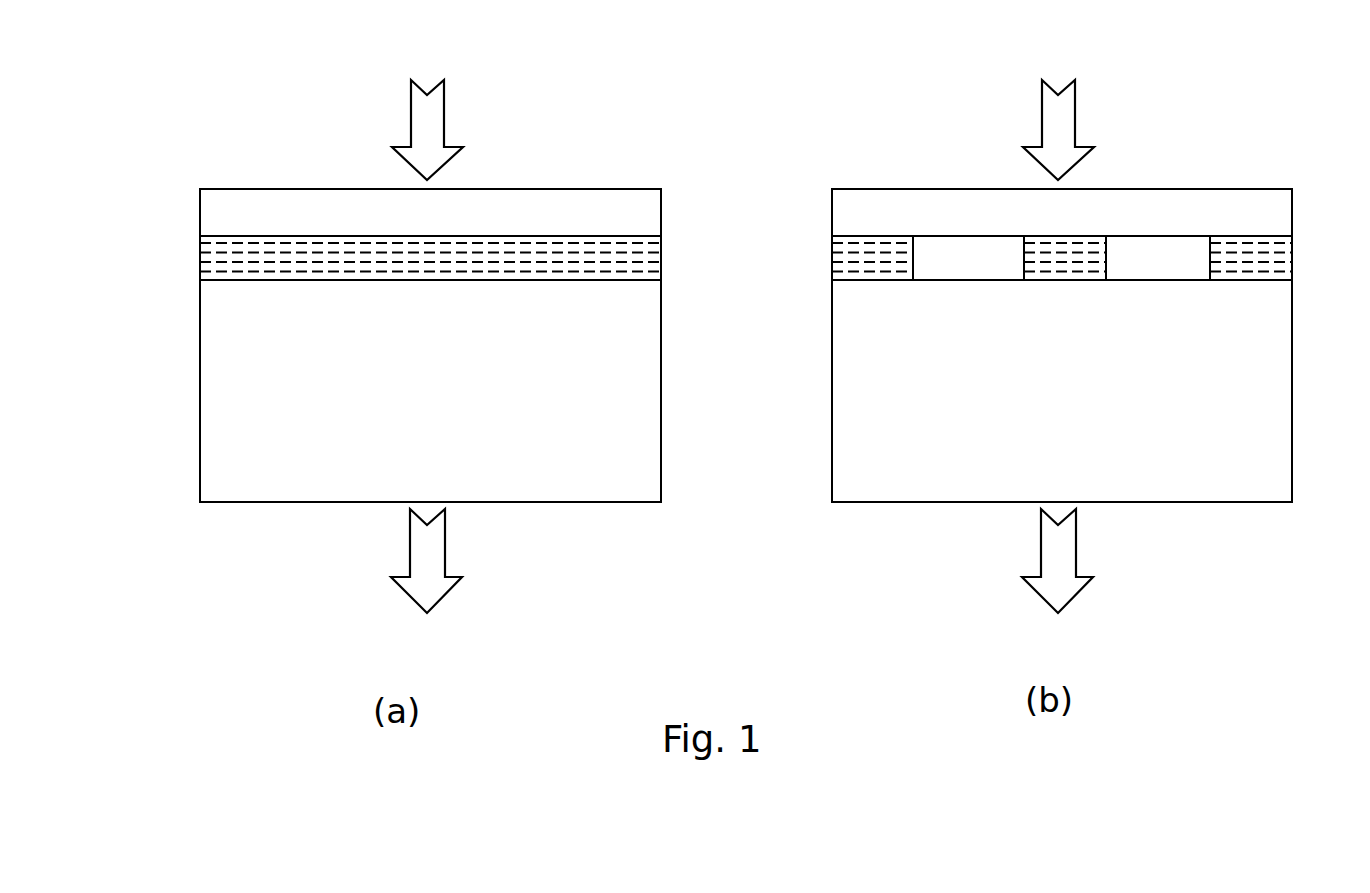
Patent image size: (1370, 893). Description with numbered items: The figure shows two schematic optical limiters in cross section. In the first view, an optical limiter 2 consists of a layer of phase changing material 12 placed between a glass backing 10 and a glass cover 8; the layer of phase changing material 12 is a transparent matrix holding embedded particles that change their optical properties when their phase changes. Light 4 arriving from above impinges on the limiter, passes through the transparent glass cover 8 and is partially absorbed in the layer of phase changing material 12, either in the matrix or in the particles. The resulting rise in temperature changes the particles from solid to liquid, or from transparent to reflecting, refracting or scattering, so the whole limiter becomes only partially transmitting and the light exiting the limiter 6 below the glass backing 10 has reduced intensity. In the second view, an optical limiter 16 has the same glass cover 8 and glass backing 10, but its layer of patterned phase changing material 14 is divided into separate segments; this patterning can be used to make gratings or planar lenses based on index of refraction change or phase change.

The optical limiter 2 is at (672, 188).
The light 4 is at (743, 130).
The light exiting the limiter 6 is at (742, 561).
The glass cover 8 is at (232, 197).
The glass backing 10 is at (276, 485).
The layer of phase changing material 12 is at (205, 270).
The layer of patterned phase changing material 14 is at (838, 272).
The optical limiter 16 is at (1304, 188).